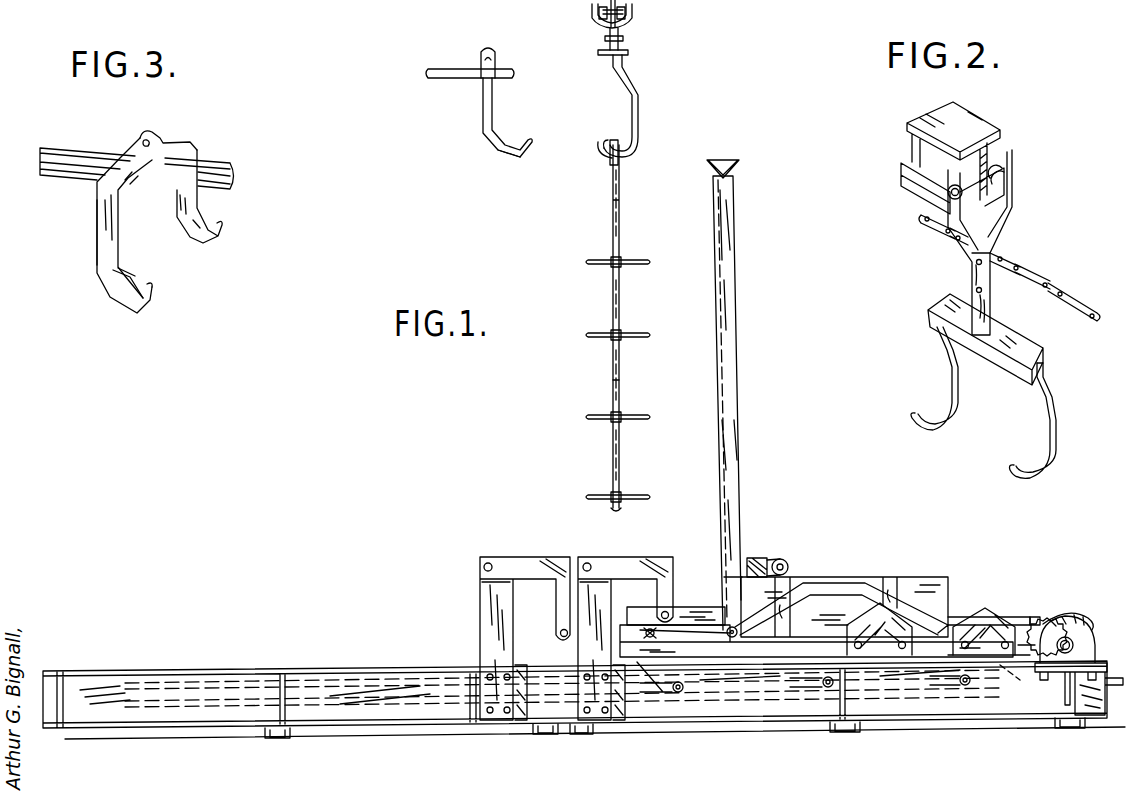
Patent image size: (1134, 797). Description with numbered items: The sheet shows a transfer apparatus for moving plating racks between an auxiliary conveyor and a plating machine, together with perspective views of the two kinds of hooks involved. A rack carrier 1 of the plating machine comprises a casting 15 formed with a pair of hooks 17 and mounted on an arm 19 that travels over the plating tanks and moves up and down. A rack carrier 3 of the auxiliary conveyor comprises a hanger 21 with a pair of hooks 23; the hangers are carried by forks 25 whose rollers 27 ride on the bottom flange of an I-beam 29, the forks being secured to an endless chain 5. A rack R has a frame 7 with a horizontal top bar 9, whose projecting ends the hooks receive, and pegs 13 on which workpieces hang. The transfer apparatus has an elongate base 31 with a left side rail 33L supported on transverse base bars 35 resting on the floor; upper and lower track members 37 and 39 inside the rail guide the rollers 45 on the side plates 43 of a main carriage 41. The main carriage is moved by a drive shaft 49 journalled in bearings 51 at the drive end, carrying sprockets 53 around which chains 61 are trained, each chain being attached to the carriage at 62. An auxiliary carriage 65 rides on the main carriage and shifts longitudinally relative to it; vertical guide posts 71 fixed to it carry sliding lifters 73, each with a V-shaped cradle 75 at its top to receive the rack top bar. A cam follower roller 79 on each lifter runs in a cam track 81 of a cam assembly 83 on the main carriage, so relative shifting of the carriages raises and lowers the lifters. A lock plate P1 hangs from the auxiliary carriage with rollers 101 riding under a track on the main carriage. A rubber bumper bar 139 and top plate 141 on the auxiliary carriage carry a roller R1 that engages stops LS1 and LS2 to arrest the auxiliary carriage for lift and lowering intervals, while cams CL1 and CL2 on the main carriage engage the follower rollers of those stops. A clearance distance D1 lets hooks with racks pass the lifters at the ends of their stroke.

In FIG. 3, the rack carrier 1 is at (86, 227).
In FIG. 1, the rack carrier 1 is at (473, 101).
In FIG. 2, the rack carrier 3 is at (1059, 369).
In FIG. 1, the rack carrier 3 is at (652, 96).
In FIG. 2, the endless chain 5 is at (1052, 286).
In FIG. 1, the endless chain 5 is at (620, 30).
In FIG. 1, the frame 7 is at (612, 300).
In FIG. 1, the top bar 9 is at (600, 142).
In FIG. 1, the pegs 13 is at (600, 261).
In FIG. 3, the casting 15 is at (96, 265).
In FIG. 3, the hooks 17 is at (224, 231).
In FIG. 1, the hooks 17 is at (525, 159).
In FIG. 3, the arm 19 is at (83, 152).
In FIG. 2, the hanger 21 is at (935, 305).
In FIG. 1, the hanger 21 is at (630, 52).
In FIG. 2, the hooks 23 is at (924, 430).
In FIG. 1, the hooks 23 is at (597, 150).
In FIG. 2, the forks 25 is at (1013, 212).
In FIG. 1, the forks 25 is at (633, 13).
In FIG. 2, the rollers 27 is at (962, 170).
In FIG. 1, the rollers 27 is at (596, 6).
In FIG. 2, the I-beam 29 is at (985, 118).
In FIG. 1, the I-beam 29 is at (600, 27).
In FIG. 1, the base 31 is at (157, 659).
In FIG. 1, the left side rail 33L is at (205, 720).
In FIG. 1, the transverse base bars 35 is at (538, 730).
In FIG. 1, the upper horizontal track member 37 is at (228, 682).
In FIG. 1, the lower horizontal track member 39 is at (175, 712).
In FIG. 1, the main carriage 41 is at (1002, 614).
In FIG. 1, the side plates 43 is at (1008, 676).
In FIG. 1, the rollers 45 is at (670, 692).
In FIG. 1, the drive shaft 49 is at (1082, 640).
In FIG. 1, the bearings 51 is at (1072, 638).
In FIG. 1, the sprockets 53 is at (1050, 618).
In FIG. 1, the chains 61 is at (1070, 612).
In FIG. 1, the chain attachment 62 is at (1034, 616).
In FIG. 1, the auxiliary carriage 65 is at (700, 612).
In FIG. 1, the vertical guide posts 71 is at (736, 312).
In FIG. 1, the lifter 73 is at (736, 262).
In FIG. 1, the V-shaped cradle 75 is at (740, 162).
In FIG. 1, the cam follower roller 79 is at (737, 632).
In FIG. 1, the cam slot or track 81 is at (858, 578).
In FIG. 1, the cam assembly 83 is at (955, 570).
In FIG. 1, the rollers 101 is at (647, 628).
In FIG. 1, the rubber bumper bar 139 is at (738, 572).
In FIG. 1, the top plate 141 is at (758, 554).
In FIG. 1, the clearance distance D1 is at (706, 206).
In FIG. 1, the rack R is at (605, 384).
In FIG. 1, the roller R1 is at (786, 558).
In FIG. 1, the left vertical lock plate P1 is at (672, 632).
In FIG. 1, the stop LS1 is at (630, 555).
In FIG. 1, the stop LS2 is at (522, 554).
In FIG. 1, the first cam CL1 is at (891, 600).
In FIG. 1, the second cam CL2 is at (975, 622).